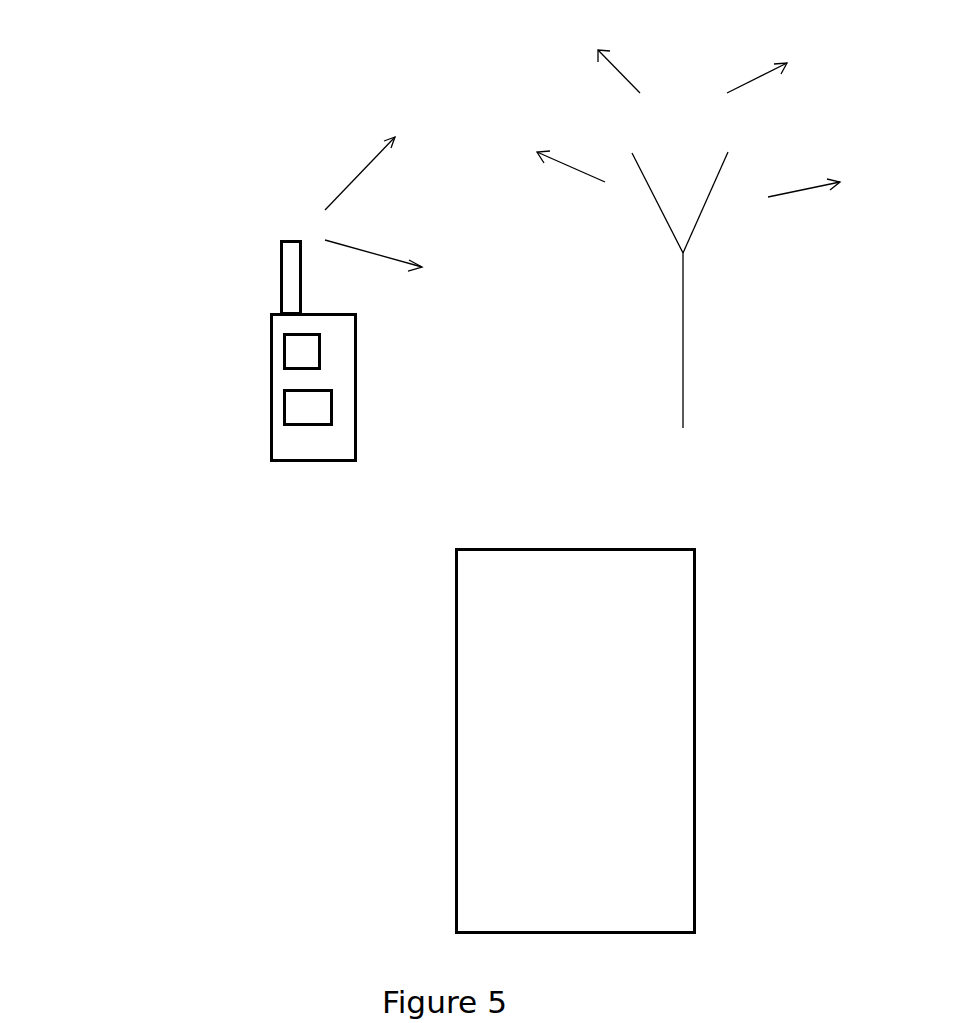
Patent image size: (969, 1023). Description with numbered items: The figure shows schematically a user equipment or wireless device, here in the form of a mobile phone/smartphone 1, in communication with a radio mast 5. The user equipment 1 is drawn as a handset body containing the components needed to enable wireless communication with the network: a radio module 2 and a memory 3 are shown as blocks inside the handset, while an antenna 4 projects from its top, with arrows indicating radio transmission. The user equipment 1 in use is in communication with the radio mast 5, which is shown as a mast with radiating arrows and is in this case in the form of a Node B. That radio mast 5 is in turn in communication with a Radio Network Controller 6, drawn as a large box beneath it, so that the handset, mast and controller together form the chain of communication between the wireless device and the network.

The user equipment 1 is at (270, 360).
The radio module 2 is at (322, 342).
The memory 3 is at (280, 412).
The antenna 4 is at (278, 242).
The radio mast 5 is at (685, 293).
The Radio Network Controller 6 is at (695, 770).